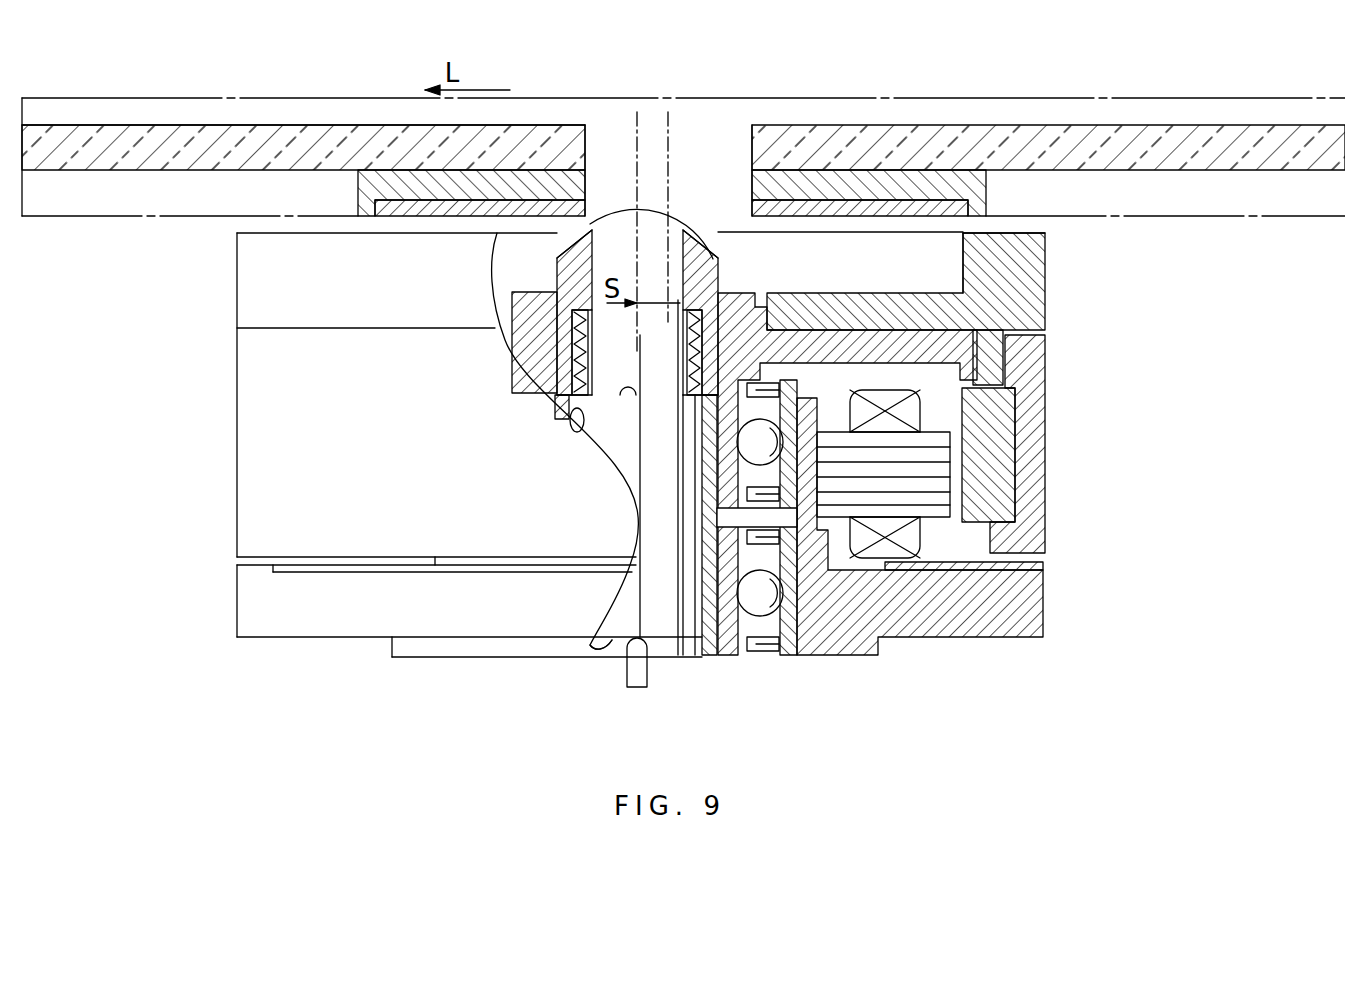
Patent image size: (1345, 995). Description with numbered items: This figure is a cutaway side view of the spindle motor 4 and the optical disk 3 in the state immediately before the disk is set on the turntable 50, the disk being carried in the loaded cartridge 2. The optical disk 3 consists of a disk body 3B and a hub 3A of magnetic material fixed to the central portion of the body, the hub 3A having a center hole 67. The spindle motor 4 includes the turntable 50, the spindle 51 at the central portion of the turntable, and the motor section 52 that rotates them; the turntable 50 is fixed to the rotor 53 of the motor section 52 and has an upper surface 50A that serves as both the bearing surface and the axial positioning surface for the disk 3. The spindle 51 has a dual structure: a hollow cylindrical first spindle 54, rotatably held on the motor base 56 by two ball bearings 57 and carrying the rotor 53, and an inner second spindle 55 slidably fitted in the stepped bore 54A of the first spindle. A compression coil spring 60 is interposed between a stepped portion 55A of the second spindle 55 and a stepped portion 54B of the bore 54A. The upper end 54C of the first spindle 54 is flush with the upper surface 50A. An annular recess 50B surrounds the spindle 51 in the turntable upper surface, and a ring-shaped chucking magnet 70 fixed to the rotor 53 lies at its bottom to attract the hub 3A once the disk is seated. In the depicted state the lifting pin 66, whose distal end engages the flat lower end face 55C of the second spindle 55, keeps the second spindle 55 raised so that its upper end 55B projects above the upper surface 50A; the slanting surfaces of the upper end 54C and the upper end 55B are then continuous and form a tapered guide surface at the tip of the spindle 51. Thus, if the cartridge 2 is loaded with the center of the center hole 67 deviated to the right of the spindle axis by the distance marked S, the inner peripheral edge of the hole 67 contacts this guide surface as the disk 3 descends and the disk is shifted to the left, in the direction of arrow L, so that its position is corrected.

The cartridge 2 is at (258, 86).
The optical disk 3 is at (1238, 150).
The hub 3A is at (876, 210).
The disk body 3B is at (1158, 130).
The spindle motor 4 is at (250, 500).
The turntable 50 is at (1040, 292).
The upper surface 50A is at (1020, 230).
The annular recess 50B is at (907, 247).
The spindle 51 is at (717, 250).
The motor section 52 is at (1040, 530).
The rotor 53 is at (1033, 410).
The first spindle 54 is at (720, 271).
The bore 54A is at (580, 424).
The stepped portion 54B is at (577, 316).
The upper end 54C is at (555, 268).
The second spindle 55 is at (636, 466).
The stepped portion 55A is at (620, 393).
The upper end 55B is at (640, 208).
The lower end face 55C is at (592, 652).
The motor base 56 is at (953, 622).
The ball bearings 57 is at (782, 397).
The compression coil spring 60 is at (578, 388).
The lifting pin 66 is at (650, 662).
The center hole 67 is at (745, 210).
The chucking magnet 70 is at (945, 290).